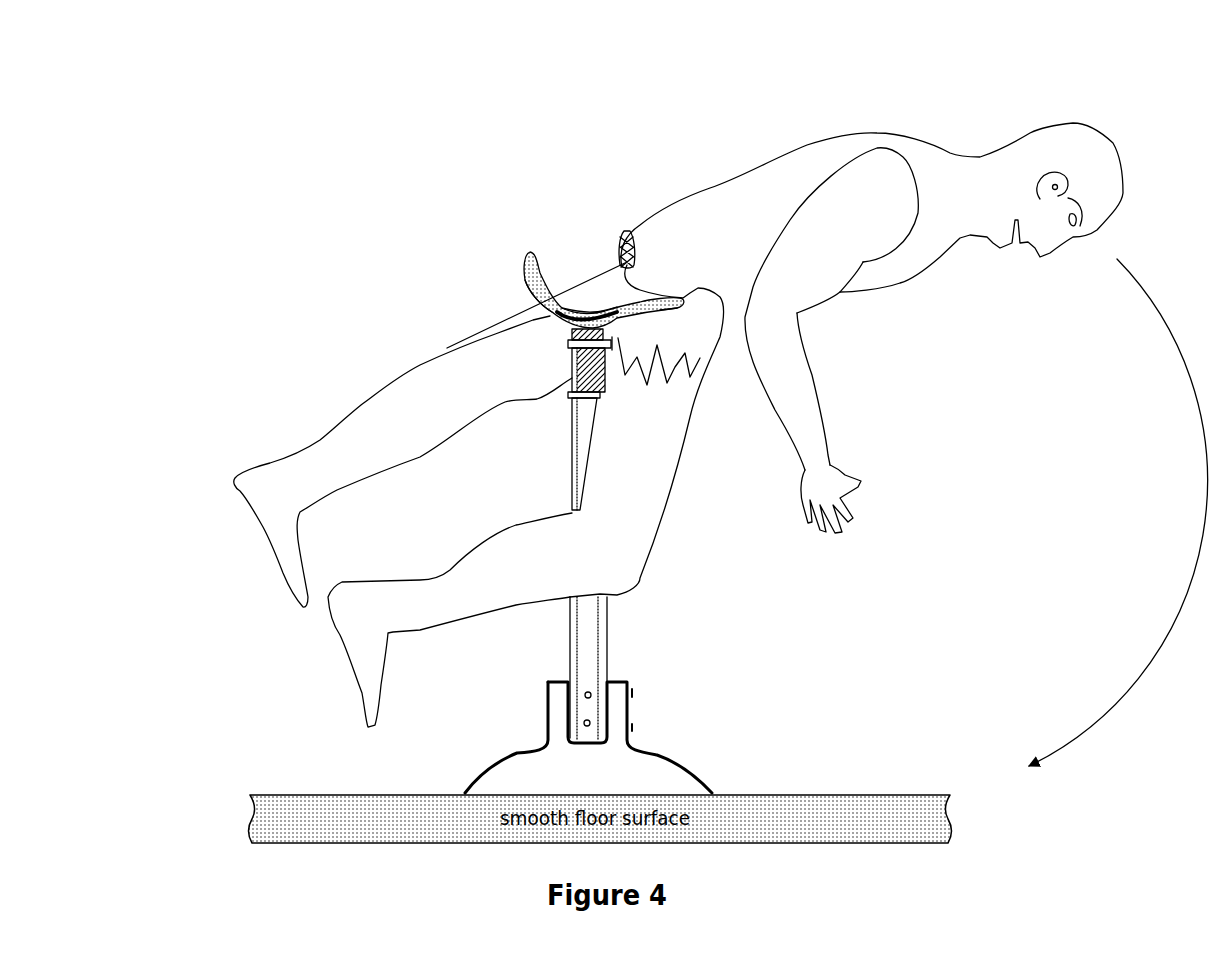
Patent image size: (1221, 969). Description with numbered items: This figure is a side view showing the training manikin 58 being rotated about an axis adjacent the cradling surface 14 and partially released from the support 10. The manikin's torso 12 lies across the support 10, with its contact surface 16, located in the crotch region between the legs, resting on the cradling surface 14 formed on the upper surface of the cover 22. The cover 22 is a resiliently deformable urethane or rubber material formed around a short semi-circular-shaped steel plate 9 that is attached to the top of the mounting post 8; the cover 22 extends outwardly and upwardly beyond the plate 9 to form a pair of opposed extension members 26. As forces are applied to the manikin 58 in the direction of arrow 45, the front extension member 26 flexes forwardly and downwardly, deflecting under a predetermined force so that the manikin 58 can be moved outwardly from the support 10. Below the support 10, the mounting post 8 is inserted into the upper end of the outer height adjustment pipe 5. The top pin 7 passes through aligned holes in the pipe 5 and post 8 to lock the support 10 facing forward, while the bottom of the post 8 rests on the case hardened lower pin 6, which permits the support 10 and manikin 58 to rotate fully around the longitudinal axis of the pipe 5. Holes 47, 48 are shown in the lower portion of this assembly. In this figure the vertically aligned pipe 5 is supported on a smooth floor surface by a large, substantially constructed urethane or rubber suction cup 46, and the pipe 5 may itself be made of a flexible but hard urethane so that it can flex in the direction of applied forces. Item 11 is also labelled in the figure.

The outer height adjustment pipe 5 is at (596, 621).
The lower pin 6 is at (572, 385).
The top pin 7 is at (567, 351).
The mounting post 8 is at (567, 340).
The semi-circular-shaped steel plate 9 is at (565, 310).
The support 10 is at (600, 324).
The waistband 11 is at (630, 243).
The torso 12 is at (731, 196).
The cradling surface 14 is at (587, 312).
The contact surface 16 is at (627, 266).
The cover 22 is at (568, 312).
The extension members 26 is at (524, 262).
The arrow 45 is at (1192, 527).
The suction cup 46 is at (653, 770).
The adjustment hole 47 is at (591, 694).
The adjustment hole 48 is at (590, 722).
The training manikin 58 is at (879, 96).